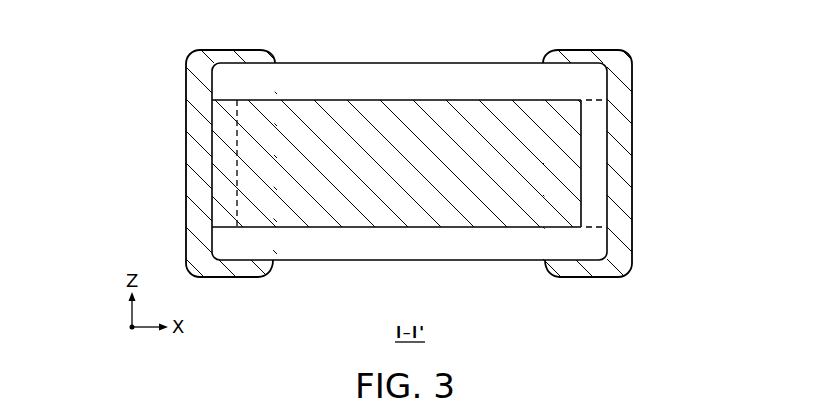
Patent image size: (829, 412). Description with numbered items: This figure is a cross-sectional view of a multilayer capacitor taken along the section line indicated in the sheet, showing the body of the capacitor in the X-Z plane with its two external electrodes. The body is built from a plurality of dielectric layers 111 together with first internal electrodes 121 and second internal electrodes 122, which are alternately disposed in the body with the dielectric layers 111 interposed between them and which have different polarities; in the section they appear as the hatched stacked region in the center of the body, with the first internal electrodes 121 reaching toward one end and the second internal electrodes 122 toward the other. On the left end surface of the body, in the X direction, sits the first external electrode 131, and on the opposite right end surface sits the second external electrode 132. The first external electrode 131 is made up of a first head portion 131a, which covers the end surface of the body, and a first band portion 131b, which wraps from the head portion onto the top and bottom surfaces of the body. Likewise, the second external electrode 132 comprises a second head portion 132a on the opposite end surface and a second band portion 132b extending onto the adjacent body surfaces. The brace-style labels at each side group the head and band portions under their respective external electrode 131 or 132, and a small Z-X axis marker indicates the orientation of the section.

The dielectric layer 111 is at (415, 82).
The first internal electrode 121 is at (308, 120).
The second internal electrode 122 is at (597, 115).
The first external electrode 131 is at (164, 160).
The first head portion 131a is at (195, 127).
The first band portion 131b is at (222, 51).
The second external electrode 132 is at (654, 160).
The second head portion 132a is at (627, 127).
The second band portion 132b is at (598, 51).